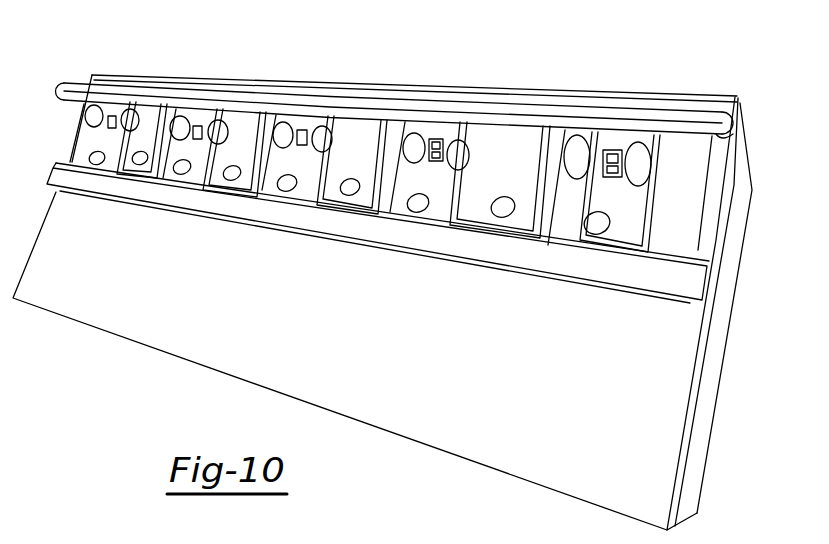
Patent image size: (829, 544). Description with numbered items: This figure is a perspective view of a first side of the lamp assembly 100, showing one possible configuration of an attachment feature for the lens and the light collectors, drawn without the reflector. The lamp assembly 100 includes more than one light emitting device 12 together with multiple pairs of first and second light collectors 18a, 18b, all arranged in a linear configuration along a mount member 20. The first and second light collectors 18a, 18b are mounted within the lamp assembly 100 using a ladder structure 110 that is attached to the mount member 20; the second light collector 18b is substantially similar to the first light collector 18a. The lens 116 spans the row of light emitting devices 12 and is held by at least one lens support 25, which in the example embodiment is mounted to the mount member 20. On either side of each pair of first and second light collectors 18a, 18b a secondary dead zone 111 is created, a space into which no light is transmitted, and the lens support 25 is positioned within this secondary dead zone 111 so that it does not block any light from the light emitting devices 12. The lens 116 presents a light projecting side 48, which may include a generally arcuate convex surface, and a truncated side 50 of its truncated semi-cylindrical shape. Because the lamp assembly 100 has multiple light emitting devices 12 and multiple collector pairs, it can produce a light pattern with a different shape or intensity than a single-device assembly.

The lamp assembly 100 is at (716, 78).
The mount member 20 is at (690, 503).
The ladder structure 110 is at (683, 282).
The lens 116 is at (193, 89).
The light projecting side 48 is at (81, 90).
The truncated side 50 is at (705, 136).
The secondary dead zone 111 is at (513, 150).
The lens support 25 is at (473, 128).
The first light collector 18a is at (575, 143).
The second light collector 18b is at (640, 150).
The light emitting device 12 is at (614, 151).